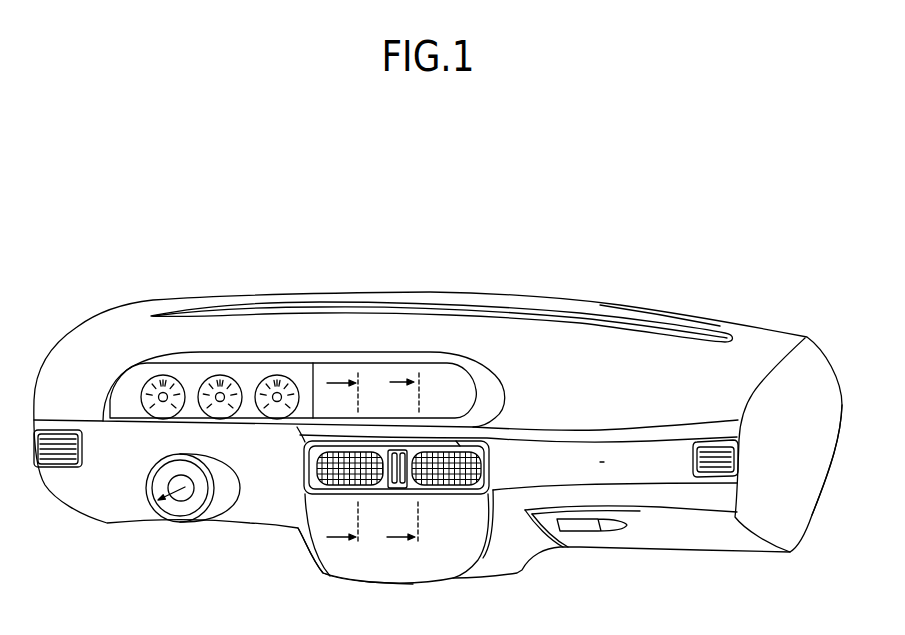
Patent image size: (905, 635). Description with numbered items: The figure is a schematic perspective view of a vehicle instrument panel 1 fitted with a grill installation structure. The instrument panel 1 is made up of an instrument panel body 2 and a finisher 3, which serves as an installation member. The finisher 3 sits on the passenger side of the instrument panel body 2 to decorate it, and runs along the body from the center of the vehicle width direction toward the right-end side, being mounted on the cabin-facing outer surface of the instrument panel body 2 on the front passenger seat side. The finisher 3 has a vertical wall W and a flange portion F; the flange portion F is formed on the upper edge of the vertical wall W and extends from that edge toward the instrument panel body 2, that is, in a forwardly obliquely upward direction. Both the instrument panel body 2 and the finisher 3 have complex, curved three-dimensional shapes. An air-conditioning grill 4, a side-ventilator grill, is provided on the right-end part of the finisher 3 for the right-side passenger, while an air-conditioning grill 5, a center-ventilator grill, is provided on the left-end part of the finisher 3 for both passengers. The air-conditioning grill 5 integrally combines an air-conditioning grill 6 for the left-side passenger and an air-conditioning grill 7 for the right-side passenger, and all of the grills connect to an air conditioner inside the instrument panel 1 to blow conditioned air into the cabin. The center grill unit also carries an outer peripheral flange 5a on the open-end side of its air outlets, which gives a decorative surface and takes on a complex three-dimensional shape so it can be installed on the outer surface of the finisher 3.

The instrument panel 1 is at (668, 292).
The instrument panel body 2 is at (803, 440).
The finisher 3 is at (648, 257).
The flange portion F is at (458, 444).
The vertical wall W is at (602, 461).
The air-conditioning grill 4 is at (712, 457).
The air-conditioning grill 5 is at (373, 226).
The outer peripheral flange 5a is at (298, 528).
The air-conditioning grill 6 is at (349, 448).
The air-conditioning grill 7 is at (427, 447).